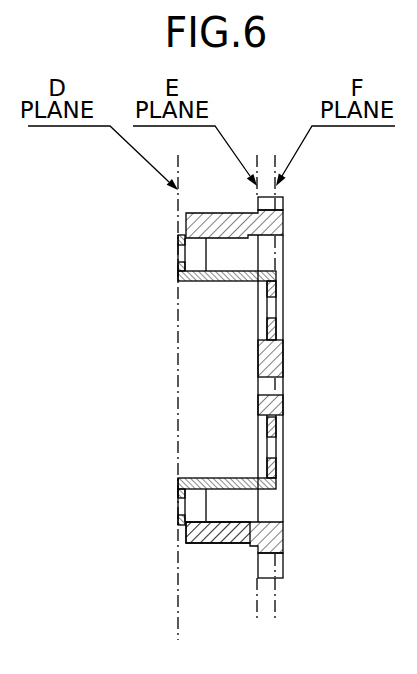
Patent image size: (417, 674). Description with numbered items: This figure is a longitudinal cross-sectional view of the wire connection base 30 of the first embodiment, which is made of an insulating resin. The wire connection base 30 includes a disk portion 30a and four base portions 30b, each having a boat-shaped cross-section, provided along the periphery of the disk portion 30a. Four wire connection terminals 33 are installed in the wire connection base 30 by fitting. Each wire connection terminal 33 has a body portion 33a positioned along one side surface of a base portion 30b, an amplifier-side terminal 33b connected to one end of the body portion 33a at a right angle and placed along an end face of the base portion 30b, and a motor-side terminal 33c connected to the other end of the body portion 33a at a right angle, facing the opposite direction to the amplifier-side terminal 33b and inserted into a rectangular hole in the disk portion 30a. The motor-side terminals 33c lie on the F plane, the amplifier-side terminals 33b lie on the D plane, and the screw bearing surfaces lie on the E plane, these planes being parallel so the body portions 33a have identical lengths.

The wire connection base 30 is at (232, 552).
The disk portion 30a is at (274, 358).
The base portion 30b is at (205, 527).
The wire connection terminal 33 is at (191, 283).
The body portion 33a is at (226, 283).
The amplifier-side terminal 33b is at (178, 237).
The motor-side terminal 33c is at (279, 328).